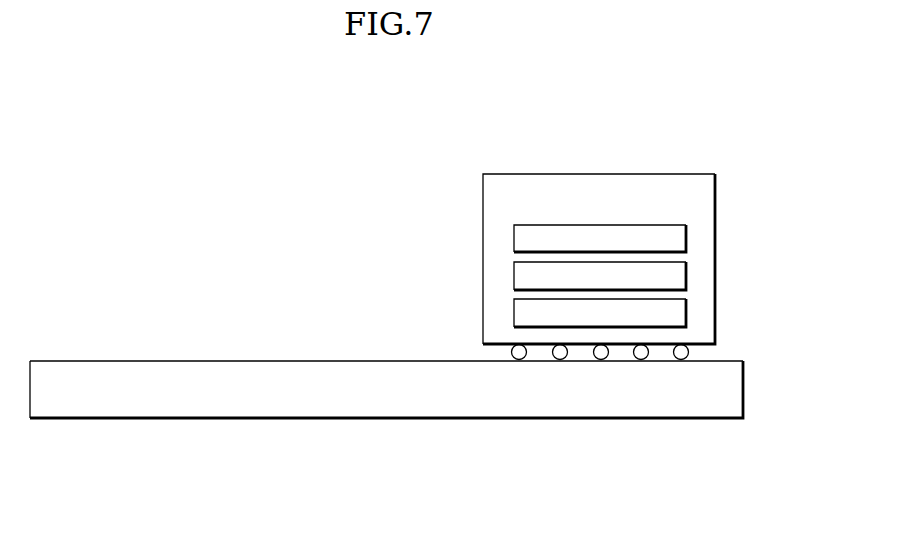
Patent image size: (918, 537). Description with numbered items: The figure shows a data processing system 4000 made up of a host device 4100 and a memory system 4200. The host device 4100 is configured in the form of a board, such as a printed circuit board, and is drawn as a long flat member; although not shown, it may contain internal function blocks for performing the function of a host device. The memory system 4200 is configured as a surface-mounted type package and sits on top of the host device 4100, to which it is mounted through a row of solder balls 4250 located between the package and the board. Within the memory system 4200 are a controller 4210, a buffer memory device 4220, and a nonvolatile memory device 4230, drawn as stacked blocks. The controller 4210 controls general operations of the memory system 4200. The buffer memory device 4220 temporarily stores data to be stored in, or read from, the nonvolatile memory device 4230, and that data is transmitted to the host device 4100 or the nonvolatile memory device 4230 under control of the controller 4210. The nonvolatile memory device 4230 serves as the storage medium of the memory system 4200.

The data processing system 4000 is at (90, 115).
The host device 4100 is at (386, 389).
The memory system 4200 is at (599, 259).
The controller 4210 is at (600, 239).
The buffer memory device 4220 is at (600, 276).
The nonvolatile memory device 4230 is at (600, 313).
The solder balls 4250 is at (700, 351).